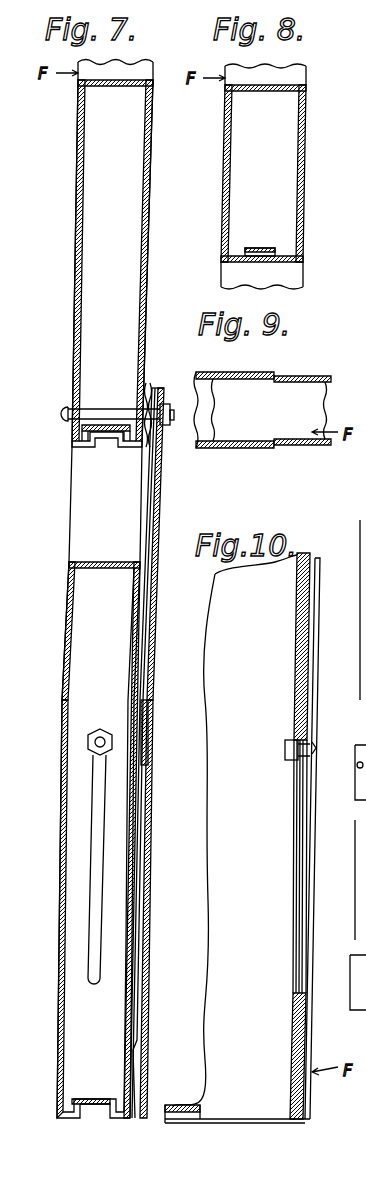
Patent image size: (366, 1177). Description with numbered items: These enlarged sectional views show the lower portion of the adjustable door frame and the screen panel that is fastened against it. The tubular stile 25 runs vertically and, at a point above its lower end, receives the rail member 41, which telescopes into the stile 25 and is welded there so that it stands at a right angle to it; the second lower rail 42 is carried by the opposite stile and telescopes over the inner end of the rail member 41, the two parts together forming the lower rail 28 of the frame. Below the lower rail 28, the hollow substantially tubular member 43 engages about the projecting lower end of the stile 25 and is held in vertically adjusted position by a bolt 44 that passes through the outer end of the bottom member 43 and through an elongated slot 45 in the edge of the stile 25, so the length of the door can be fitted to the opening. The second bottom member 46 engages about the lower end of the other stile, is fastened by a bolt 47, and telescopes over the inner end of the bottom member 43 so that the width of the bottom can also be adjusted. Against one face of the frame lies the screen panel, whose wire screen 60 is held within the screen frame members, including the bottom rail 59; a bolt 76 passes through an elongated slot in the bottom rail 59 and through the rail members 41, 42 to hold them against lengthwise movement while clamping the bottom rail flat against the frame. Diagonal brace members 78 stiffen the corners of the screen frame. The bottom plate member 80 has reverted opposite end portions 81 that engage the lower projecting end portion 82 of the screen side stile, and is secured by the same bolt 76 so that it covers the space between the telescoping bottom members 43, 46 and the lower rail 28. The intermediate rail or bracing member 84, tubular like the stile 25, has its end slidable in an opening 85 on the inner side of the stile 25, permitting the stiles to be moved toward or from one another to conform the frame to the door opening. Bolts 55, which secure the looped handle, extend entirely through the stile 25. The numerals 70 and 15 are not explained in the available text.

In FIG. 7, the stile 25 is at (131, 68).
In FIG. 8, the stile 25 is at (365, 226).
In FIG. 7, the lower rail 28 is at (70, 271).
In FIG. 7, the rail member 41 is at (82, 331).
In FIG. 7, the second lower rail 42 is at (73, 356).
In FIG. 7, the bolt 76 is at (114, 406).
In FIG. 7, the wire screen 60 is at (152, 327).
In FIG. 7, the bottom rail 59 is at (150, 458).
In FIG. 7, the bolt 47 is at (79, 840).
In FIG. 7, the lower projecting end portion 82 is at (158, 745).
In FIG. 7, the second bottom member 46 is at (63, 931).
In FIG. 7, the reverted opposite end portion 81 is at (138, 986).
In FIG. 10, the reverted opposite end portion 81 is at (355, 994).
In FIG. 7, the bottom plate member 80 is at (146, 1024).
In FIG. 8, the opening 85 is at (295, 87).
In FIG. 9, the opening 85 is at (276, 378).
In FIG. 8, the intermediate rail or bracing member 84 is at (232, 195).
In FIG. 9, the intermediate rail or bracing member 84 is at (285, 448).
In FIG. 8, the brace member 78 is at (365, 172).
In FIG. 8, the member 70 is at (365, 272).
In FIG. 9, the bolt 55 is at (365, 483).
In FIG. 10, the bolt 55 is at (365, 563).
In FIG. 10, the bolt 44 is at (284, 750).
In FIG. 10, the elongated slot 45 is at (300, 796).
In FIG. 10, the hollow substantially tubular member 43 is at (308, 801).
In FIG. 10, the member 15 is at (333, 962).